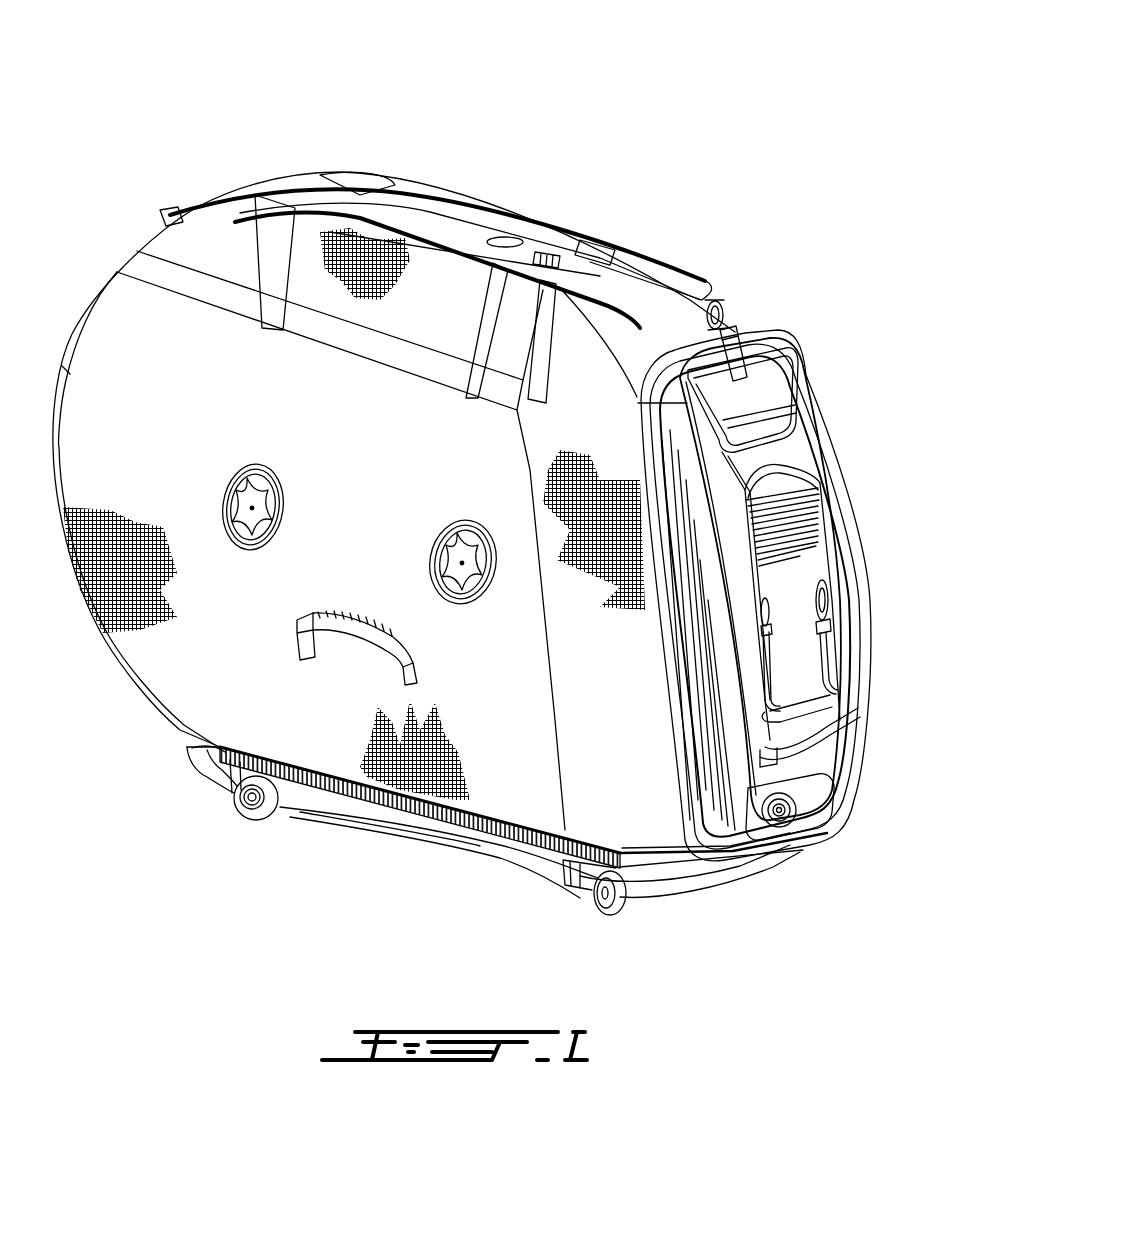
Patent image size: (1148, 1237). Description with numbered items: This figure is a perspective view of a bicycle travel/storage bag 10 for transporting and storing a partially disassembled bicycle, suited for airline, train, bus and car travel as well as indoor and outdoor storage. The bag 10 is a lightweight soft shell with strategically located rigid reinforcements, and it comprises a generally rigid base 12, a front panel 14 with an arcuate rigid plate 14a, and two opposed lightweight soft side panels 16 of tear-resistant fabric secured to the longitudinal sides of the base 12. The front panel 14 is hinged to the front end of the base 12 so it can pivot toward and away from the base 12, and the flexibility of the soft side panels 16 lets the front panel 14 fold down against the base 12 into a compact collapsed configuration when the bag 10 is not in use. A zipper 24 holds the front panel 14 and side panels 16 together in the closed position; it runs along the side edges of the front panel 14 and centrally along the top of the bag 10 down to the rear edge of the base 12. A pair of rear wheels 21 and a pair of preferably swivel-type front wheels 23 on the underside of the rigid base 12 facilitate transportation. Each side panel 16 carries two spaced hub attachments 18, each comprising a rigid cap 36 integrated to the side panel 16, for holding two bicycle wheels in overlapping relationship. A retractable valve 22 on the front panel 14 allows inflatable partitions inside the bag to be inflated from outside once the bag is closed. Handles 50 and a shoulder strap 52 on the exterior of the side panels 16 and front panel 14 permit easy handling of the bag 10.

The bicycle travel/storage bag 10 is at (192, 148).
The base 12 is at (400, 840).
The front panel 14 is at (806, 338).
The arcuate rigid plate 14a is at (770, 397).
The side panels 16 is at (430, 303).
The hub attachments 18 is at (437, 547).
The rear wheels 21 is at (267, 820).
The retractable valve 22 is at (793, 812).
The front wheels 23 is at (603, 915).
The zipper 24 is at (637, 467).
The cap 36 is at (232, 476).
The handles 50 is at (803, 707).
The shoulder strap 52 is at (677, 277).